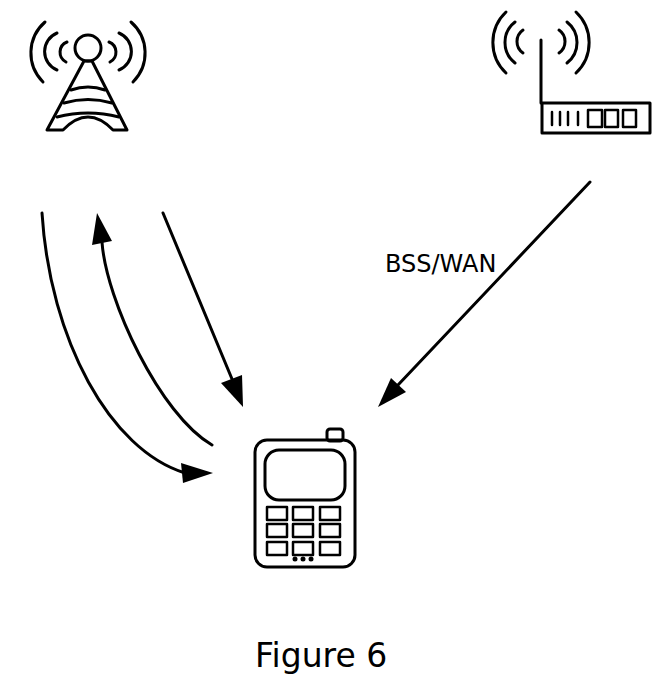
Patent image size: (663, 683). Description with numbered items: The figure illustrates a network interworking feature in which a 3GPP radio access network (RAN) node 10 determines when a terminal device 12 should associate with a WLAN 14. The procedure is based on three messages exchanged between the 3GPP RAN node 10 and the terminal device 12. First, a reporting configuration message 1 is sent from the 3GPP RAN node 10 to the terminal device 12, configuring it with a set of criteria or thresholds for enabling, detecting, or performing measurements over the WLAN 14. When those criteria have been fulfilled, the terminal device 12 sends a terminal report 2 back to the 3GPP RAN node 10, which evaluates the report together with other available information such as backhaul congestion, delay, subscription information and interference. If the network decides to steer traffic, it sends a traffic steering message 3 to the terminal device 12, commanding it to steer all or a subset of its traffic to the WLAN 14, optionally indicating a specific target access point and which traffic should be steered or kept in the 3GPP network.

The 3GPP radio access network (RAN) node 10 is at (111, 115).
The terminal device 12 is at (355, 510).
The WLAN 14 is at (540, 120).
The reporting configuration message 1 is at (127, 351).
The terminal report 2 is at (146, 329).
The traffic steering message 3 is at (211, 310).